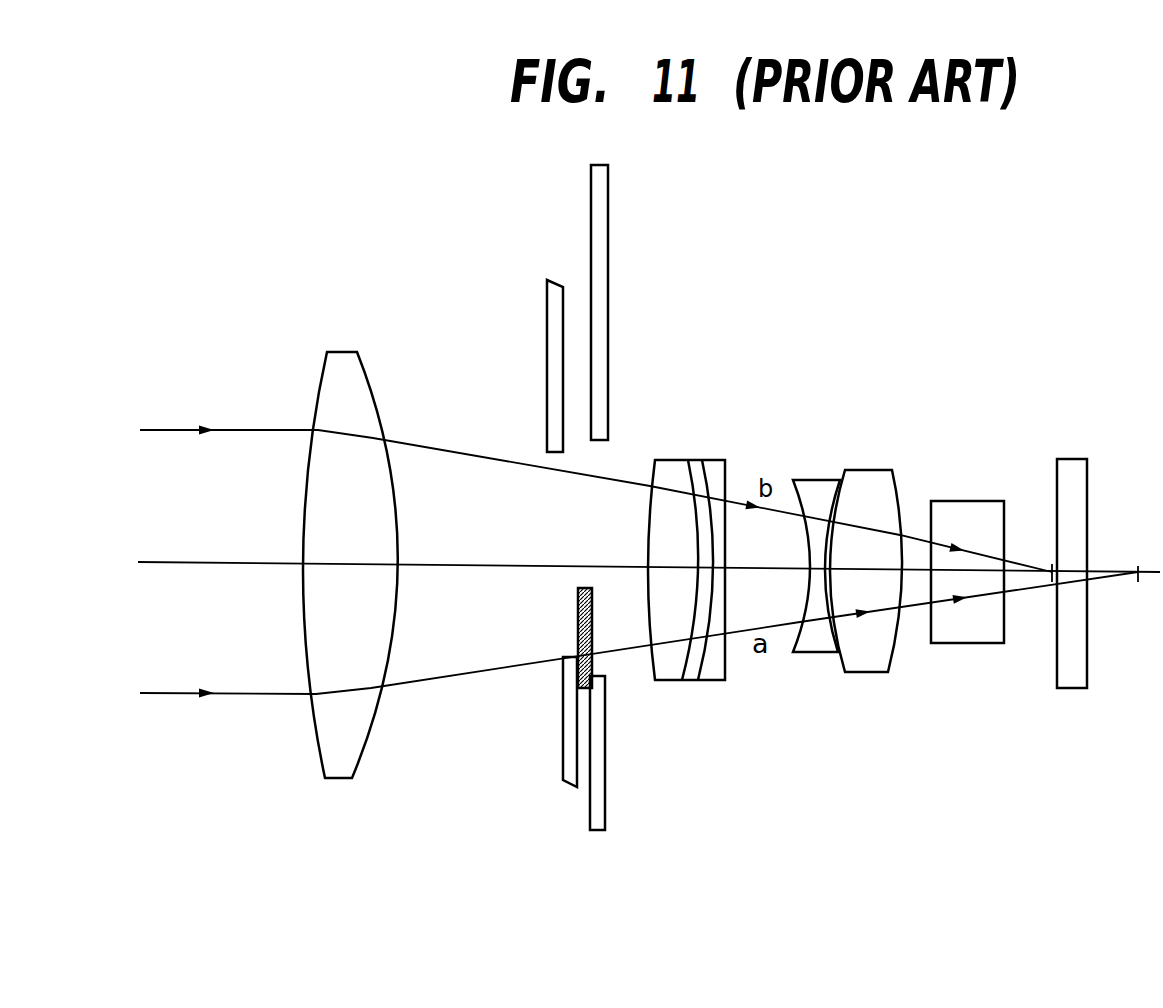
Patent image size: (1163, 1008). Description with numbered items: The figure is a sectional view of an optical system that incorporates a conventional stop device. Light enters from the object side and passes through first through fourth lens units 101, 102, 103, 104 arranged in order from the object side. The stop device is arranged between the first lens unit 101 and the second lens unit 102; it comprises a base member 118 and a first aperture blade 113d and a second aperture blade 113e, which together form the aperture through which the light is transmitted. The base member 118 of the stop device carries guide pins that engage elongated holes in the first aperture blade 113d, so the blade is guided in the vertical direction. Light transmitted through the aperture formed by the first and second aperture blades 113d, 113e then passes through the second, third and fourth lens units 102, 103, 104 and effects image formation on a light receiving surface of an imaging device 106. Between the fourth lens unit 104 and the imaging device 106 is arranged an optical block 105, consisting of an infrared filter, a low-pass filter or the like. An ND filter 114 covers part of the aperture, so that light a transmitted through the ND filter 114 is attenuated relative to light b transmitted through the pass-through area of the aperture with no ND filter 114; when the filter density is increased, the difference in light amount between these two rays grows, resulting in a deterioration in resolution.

The first lens unit 101 is at (338, 780).
The second lens unit 102 is at (668, 458).
The third lens unit 103 is at (810, 480).
The fourth lens unit 104 is at (868, 468).
The optical block 105 is at (968, 500).
The imaging device 106 is at (1072, 458).
The first aperture blade 113d is at (547, 360).
The second aperture blade 113e is at (563, 762).
The ND filter 114 is at (578, 610).
The base member 118 is at (608, 226).